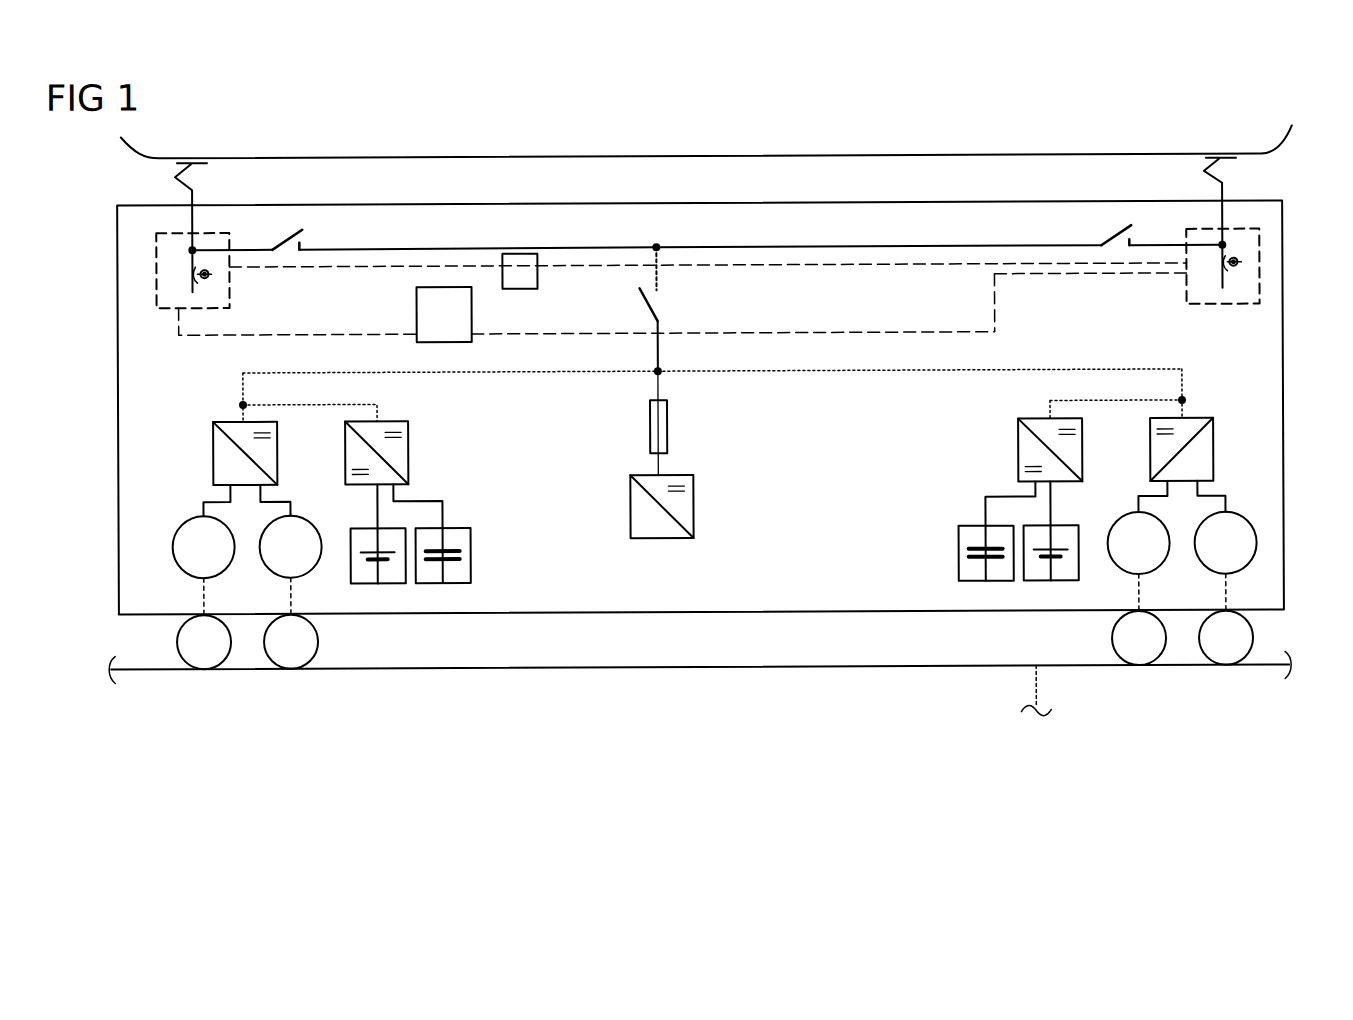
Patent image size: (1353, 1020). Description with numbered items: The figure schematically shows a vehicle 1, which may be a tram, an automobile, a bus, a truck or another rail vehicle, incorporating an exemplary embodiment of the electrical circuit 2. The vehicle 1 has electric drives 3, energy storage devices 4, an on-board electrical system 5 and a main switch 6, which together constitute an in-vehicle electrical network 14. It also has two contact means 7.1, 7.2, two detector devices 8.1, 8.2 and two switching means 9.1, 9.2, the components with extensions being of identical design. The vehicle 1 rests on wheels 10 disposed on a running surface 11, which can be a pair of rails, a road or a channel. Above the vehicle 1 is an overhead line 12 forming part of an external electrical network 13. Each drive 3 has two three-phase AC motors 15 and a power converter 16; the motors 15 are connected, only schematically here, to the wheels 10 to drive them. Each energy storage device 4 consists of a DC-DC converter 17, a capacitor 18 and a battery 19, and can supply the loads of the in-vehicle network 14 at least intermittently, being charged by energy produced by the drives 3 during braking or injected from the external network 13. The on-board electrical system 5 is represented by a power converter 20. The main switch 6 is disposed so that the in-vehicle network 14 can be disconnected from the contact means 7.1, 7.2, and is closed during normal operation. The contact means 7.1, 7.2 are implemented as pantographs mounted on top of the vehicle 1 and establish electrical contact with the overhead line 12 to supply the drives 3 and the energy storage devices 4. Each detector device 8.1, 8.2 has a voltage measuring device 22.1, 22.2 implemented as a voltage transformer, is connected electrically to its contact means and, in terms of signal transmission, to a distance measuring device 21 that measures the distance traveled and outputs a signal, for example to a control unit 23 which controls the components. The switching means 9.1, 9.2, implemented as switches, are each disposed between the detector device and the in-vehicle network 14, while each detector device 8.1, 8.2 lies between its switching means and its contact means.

The vehicle 1 is at (780, 612).
The electrical circuit 2 is at (700, 724).
The electric drive 3 is at (704, 510).
The energy storage device 4 is at (714, 540).
The on-board electrical system 5 is at (701, 455).
The main switch 6 is at (640, 307).
The contact means 7.1 is at (1250, 172).
The contact means 7.2 is at (150, 183).
The detector device 8.1 is at (1267, 261).
The detector device 8.2 is at (140, 276).
The switching means 9.1 is at (1130, 224).
The switching means 9.2 is at (293, 228).
The wheels 10 is at (245, 690).
The running surface 11 is at (638, 667).
The overhead line 12 is at (693, 155).
The external electrical network 13 is at (706, 95).
The in-vehicle electrical network 14 is at (803, 275).
The three-phase AC motor 15 is at (172, 540).
The power converter 16 is at (213, 453).
The DC-DC converter 17 is at (408, 450).
The capacitor 18 is at (442, 582).
The battery 19 is at (385, 582).
The power converter 20 is at (693, 512).
The distance measuring device 21 is at (440, 285).
The voltage measuring device 22.1 is at (1225, 274).
The voltage measuring device 22.2 is at (192, 283).
The control unit 23 is at (520, 253).